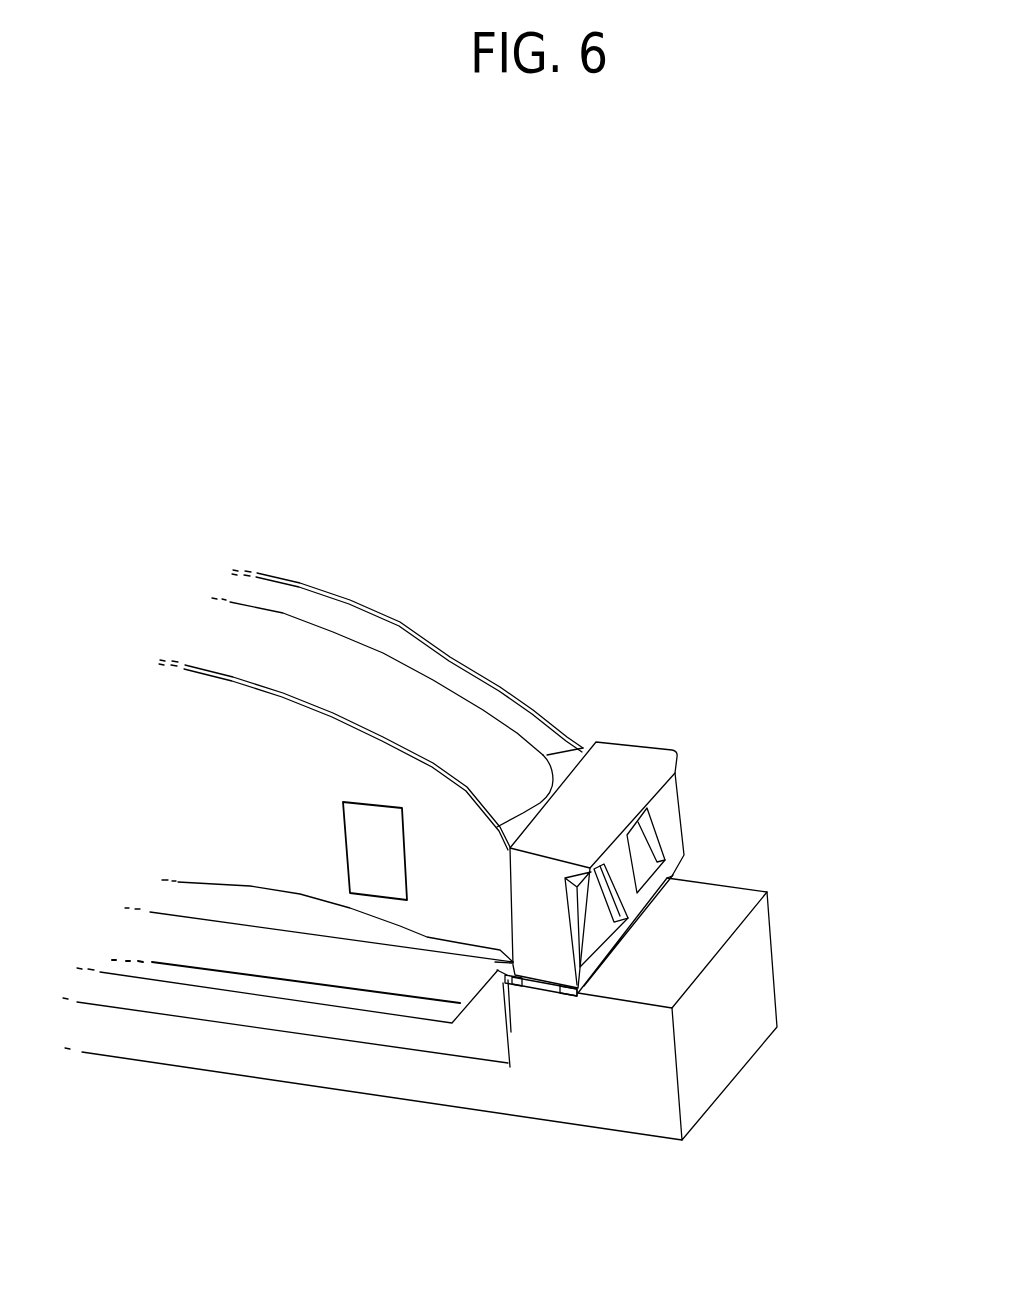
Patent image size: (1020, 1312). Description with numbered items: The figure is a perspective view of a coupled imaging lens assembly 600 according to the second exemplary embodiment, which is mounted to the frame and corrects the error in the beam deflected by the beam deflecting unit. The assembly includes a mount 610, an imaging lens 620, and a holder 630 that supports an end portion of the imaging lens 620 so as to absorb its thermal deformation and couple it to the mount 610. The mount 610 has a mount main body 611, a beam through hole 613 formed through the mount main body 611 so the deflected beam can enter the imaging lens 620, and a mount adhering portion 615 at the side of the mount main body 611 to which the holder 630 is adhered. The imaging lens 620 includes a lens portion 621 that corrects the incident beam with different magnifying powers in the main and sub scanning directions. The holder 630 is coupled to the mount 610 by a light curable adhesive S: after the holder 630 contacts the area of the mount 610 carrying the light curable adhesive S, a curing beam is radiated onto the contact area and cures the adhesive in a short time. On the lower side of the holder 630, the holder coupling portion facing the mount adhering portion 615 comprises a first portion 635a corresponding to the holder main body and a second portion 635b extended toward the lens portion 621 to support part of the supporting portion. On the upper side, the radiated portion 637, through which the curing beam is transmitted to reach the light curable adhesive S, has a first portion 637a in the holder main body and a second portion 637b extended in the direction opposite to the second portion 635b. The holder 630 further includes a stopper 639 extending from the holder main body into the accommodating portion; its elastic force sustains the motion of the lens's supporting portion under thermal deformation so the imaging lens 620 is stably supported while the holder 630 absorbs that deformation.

The imaging lens assembly 600 is at (735, 533).
The mount 610 is at (767, 1089).
The mount main body 611 is at (362, 1070).
The beam through hole 613 is at (249, 986).
The mount adhering portion 615 is at (735, 900).
The imaging lens 620 is at (469, 616).
The lens portion 621 is at (265, 763).
The holder 630 is at (707, 772).
The first portion 635a is at (548, 965).
The second portion 635b is at (510, 988).
The radiated portion 637 is at (698, 643).
The first portion 637a is at (600, 753).
The second portion 637b is at (670, 750).
The stopper 639 is at (672, 877).
The light curable adhesive S is at (547, 982).